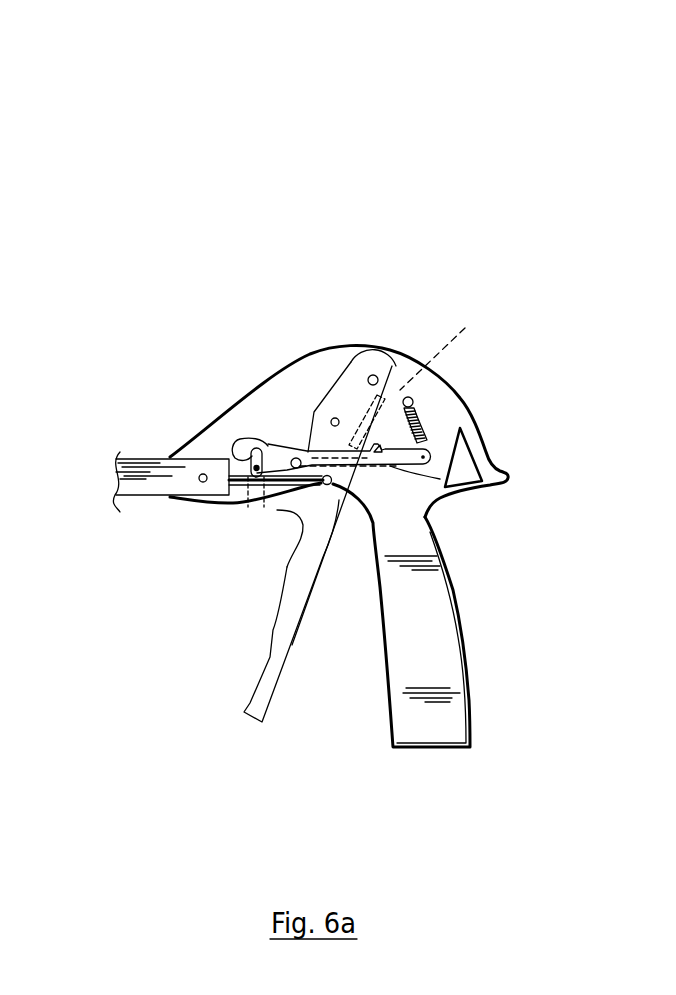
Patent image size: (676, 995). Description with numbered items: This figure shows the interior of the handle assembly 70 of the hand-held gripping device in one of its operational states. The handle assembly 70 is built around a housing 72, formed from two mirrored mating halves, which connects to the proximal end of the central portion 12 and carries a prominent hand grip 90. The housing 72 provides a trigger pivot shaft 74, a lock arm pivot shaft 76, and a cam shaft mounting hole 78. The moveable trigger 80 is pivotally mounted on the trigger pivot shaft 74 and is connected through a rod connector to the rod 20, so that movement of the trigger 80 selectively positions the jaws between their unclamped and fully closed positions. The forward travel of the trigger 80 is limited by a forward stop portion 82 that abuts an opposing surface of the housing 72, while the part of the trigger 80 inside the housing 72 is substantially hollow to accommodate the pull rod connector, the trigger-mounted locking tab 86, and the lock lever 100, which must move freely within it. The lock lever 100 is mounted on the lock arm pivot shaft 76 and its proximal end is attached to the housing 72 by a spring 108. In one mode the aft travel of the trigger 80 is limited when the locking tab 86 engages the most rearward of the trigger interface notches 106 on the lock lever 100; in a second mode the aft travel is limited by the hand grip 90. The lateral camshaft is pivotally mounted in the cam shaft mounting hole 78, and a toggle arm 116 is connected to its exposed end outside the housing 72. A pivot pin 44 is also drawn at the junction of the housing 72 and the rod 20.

The handle assembly 70 is at (377, 163).
The housing 72 is at (454, 391).
The hand grip 90 is at (433, 650).
The central portion 12 is at (132, 462).
The rod 20 is at (232, 506).
The pivot pin 44 is at (328, 485).
The trigger pivot shaft 74 is at (374, 375).
The trigger interface notches 106 is at (376, 452).
The locking tab 86 is at (448, 350).
The lock arm pivot shaft 76 is at (293, 458).
The forward stop portion 82 is at (277, 509).
The cam shaft mounting hole 78 is at (237, 455).
The toggle arm 116 is at (253, 492).
The trigger 80 is at (283, 645).
The lock lever 100 is at (423, 464).
The spring 108 is at (430, 425).